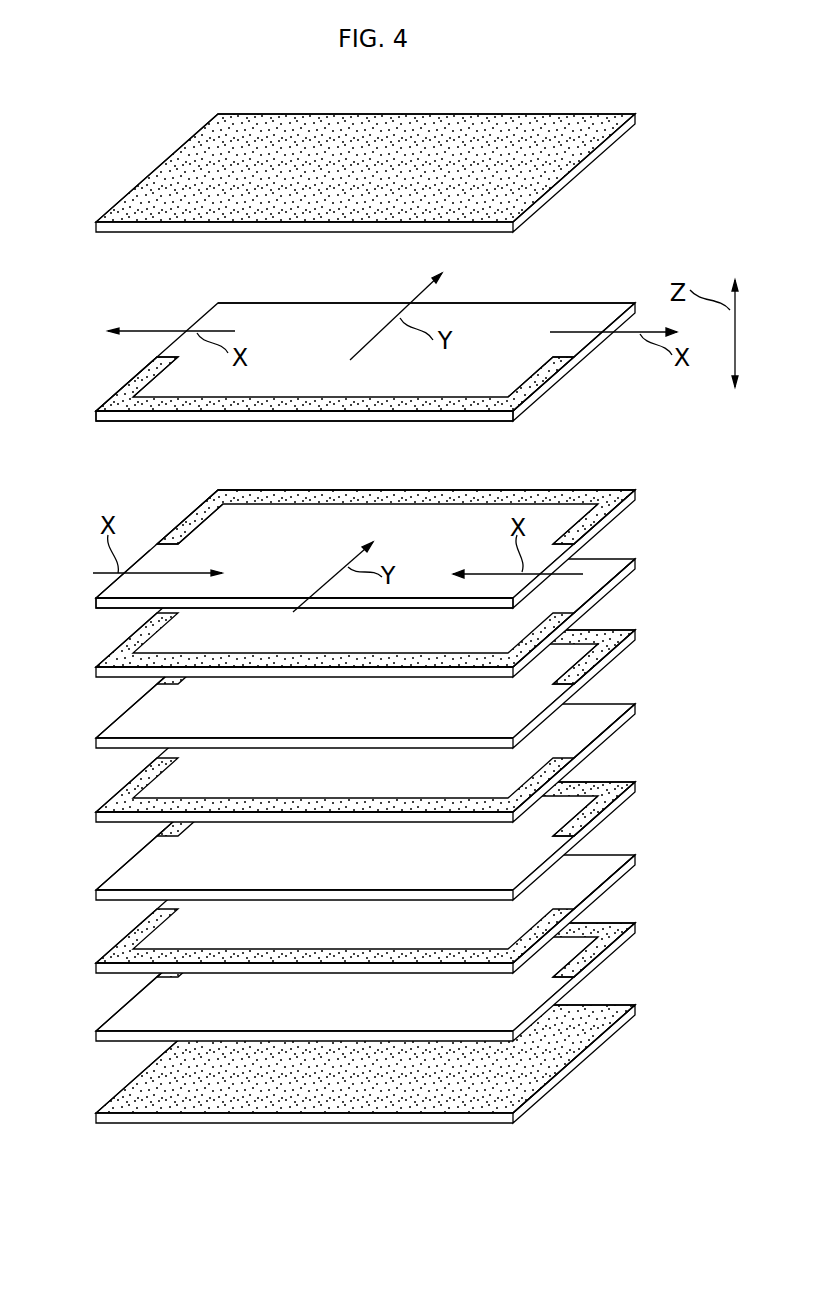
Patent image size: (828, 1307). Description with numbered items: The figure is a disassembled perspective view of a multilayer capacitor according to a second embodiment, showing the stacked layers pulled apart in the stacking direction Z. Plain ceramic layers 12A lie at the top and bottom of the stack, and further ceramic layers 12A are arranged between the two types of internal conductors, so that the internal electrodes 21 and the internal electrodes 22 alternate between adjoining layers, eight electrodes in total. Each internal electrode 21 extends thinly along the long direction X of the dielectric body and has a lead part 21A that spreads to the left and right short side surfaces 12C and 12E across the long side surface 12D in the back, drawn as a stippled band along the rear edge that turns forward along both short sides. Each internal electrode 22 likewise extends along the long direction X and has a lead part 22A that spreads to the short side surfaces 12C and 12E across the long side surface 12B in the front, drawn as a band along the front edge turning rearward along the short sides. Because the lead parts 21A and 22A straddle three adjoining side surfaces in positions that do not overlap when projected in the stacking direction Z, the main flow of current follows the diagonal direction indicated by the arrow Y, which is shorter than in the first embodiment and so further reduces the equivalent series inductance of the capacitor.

The ceramic layer 12A is at (620, 1023).
The long side surface in the front 12B is at (260, 602).
The short side surface 12C is at (583, 538).
The long side surface in the back 12D is at (375, 488).
The short side surface 12E is at (193, 512).
The internal electrode 21 is at (315, 332).
The lead part 21A is at (595, 860).
The internal electrode 22 is at (468, 518).
The lead part 22A is at (127, 1020).